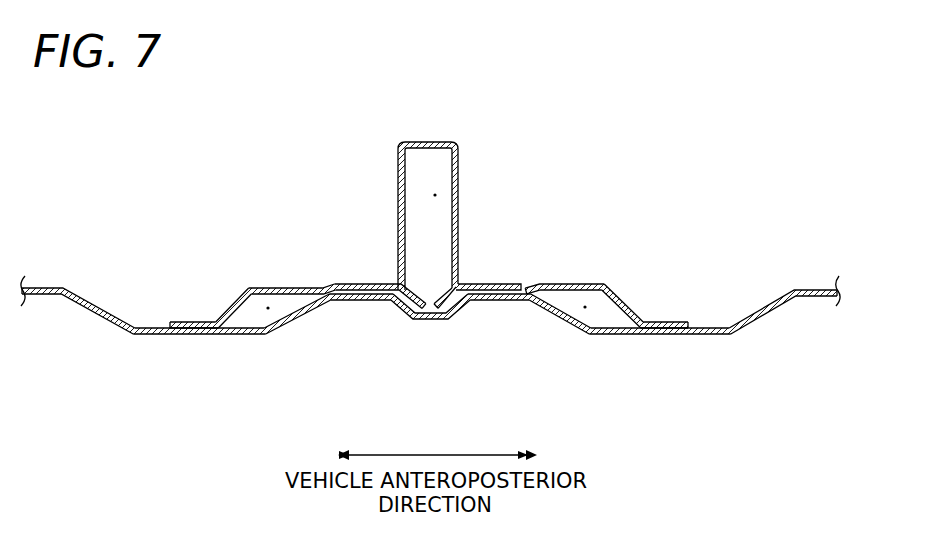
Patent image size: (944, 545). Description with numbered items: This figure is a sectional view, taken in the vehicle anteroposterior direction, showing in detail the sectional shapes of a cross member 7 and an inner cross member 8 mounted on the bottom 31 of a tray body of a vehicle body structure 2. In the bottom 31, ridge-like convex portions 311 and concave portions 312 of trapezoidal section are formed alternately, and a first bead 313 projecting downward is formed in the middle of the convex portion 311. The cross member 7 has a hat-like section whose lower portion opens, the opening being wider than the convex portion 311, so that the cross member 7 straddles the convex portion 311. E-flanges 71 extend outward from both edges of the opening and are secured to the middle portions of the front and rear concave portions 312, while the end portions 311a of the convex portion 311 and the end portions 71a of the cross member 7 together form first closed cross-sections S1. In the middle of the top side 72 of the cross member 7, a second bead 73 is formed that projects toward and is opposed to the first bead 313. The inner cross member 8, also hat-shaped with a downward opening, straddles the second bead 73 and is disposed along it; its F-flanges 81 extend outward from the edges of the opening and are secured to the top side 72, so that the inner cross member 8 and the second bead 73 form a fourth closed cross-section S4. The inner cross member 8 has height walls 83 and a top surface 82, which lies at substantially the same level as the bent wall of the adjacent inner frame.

The vehicle body structure 2 is at (724, 93).
The cross member 7 is at (419, 262).
The inner cross member 8 is at (429, 199).
The bottom 31 is at (430, 305).
The E-flange 71 is at (187, 321).
The end portion of the cross member 71a is at (230, 302).
The top side 72 is at (543, 286).
The second bead 73 is at (407, 285).
The F-flange 81 is at (482, 282).
The top surface 82 is at (427, 142).
The height wall 83 is at (398, 187).
The convex portion 311 is at (48, 297).
The end portion of the convex portion 311a is at (293, 303).
The concave portion 312 is at (235, 337).
The first bead 313 is at (431, 313).
The closed cross-section S1 is at (268, 307).
The closed cross-section S4 is at (435, 195).